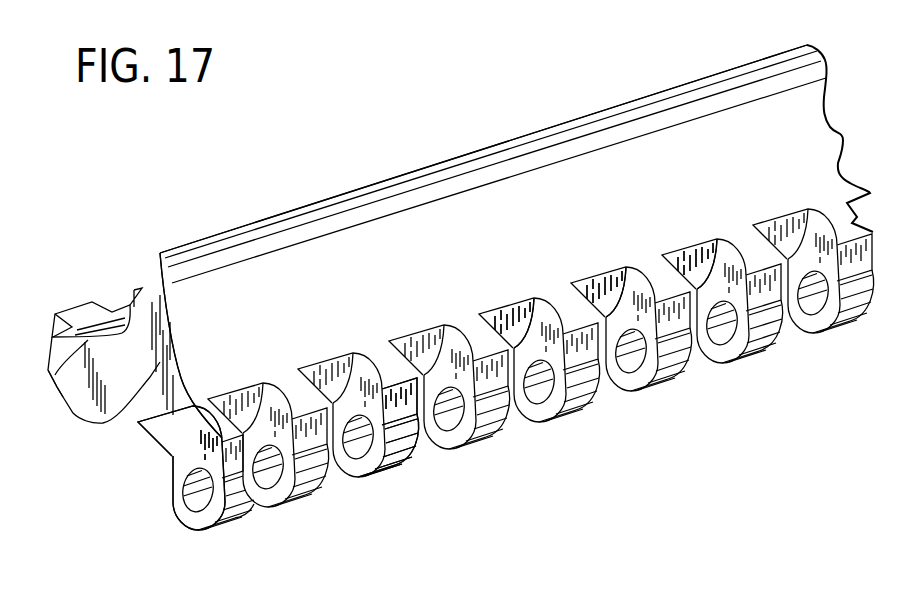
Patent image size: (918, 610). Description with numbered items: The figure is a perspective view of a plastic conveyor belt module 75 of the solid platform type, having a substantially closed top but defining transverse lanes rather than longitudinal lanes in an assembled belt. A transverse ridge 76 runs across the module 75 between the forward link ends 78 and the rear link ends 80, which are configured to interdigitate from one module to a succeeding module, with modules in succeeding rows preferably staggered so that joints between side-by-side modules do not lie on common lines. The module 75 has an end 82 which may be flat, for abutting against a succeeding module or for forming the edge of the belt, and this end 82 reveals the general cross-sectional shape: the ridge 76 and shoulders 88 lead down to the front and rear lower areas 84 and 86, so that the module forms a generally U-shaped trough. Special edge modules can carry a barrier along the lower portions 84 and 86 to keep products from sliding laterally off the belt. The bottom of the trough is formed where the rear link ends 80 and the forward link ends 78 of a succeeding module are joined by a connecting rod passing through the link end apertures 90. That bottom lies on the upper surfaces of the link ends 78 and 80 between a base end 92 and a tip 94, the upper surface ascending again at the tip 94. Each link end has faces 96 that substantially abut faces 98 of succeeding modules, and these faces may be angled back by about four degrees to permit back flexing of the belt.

The plastic conveyor belt module 75 is at (340, 86).
The transverse ridge 76 is at (526, 136).
The forward link ends 78 is at (80, 304).
The rear link ends 80 is at (497, 414).
The end 82 is at (105, 426).
The front lower area 84 is at (55, 378).
The rear lower area 86 is at (185, 425).
The shoulders 88 is at (284, 272).
The link end apertures 90 is at (358, 452).
The base end 92 is at (624, 287).
The tip 94 is at (684, 283).
The faces 96 is at (423, 436).
The faces of succeeding modules 98 is at (519, 305).